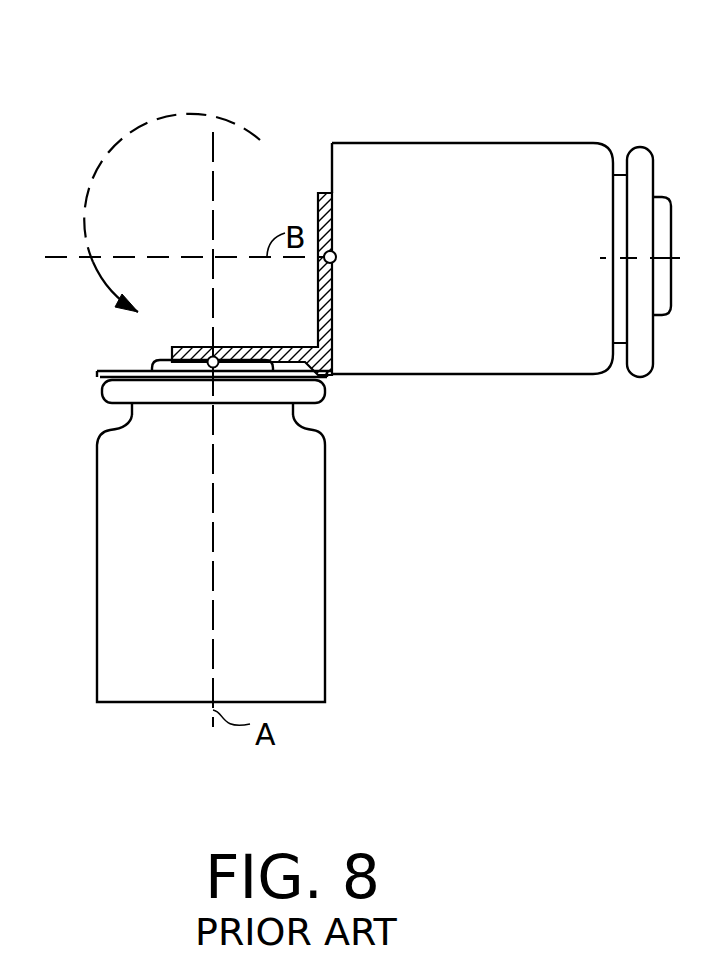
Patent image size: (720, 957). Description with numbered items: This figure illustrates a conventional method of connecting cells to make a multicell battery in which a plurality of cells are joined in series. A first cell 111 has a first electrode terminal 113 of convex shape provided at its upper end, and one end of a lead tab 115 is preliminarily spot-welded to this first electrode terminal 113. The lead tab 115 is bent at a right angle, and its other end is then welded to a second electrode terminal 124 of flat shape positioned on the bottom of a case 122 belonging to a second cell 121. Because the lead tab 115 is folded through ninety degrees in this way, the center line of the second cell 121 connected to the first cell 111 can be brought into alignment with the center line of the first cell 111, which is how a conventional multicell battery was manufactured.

The first cell 111 is at (302, 595).
The first electrode terminal 113 is at (183, 368).
The lead tab 115 is at (323, 378).
The second cell 121 is at (526, 353).
The case 122 is at (540, 143).
The second electrode terminal 124 is at (333, 167).